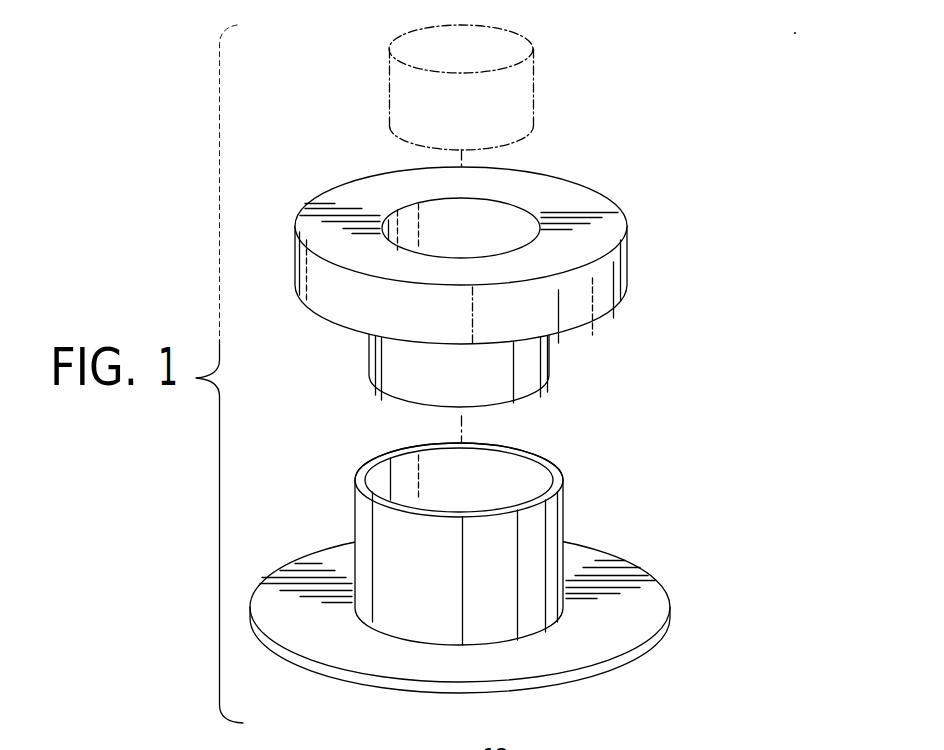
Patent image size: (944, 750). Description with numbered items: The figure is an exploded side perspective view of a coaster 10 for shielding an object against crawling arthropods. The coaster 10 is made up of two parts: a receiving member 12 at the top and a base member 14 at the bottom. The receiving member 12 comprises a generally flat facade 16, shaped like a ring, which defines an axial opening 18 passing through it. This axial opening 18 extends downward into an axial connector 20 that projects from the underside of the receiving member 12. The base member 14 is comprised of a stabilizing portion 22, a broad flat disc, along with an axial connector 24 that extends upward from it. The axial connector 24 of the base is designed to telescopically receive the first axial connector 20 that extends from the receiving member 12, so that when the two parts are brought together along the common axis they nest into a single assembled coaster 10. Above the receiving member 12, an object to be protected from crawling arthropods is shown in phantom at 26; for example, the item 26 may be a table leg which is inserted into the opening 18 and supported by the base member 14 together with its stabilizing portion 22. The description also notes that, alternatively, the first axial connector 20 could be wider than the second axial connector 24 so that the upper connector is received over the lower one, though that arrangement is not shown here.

The coaster 10 is at (603, 433).
The receiving member 12 is at (637, 248).
The base member 14 is at (647, 658).
The facade 16 is at (601, 203).
The axial opening 18 is at (515, 213).
The axial connector 20 is at (540, 357).
The stabilizing portion 22 is at (628, 560).
The axial connector 24 is at (563, 520).
The object to be protected 26 is at (541, 102).